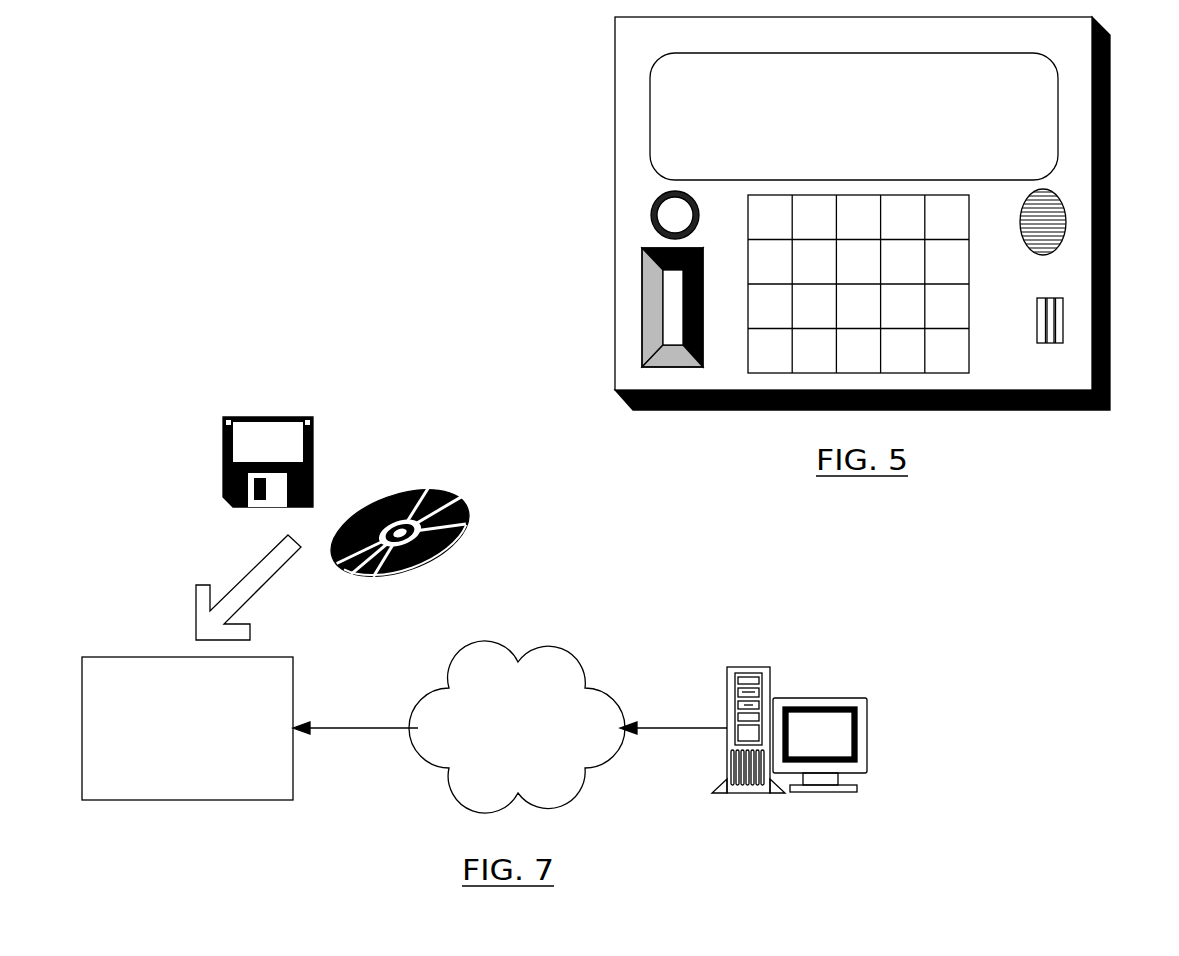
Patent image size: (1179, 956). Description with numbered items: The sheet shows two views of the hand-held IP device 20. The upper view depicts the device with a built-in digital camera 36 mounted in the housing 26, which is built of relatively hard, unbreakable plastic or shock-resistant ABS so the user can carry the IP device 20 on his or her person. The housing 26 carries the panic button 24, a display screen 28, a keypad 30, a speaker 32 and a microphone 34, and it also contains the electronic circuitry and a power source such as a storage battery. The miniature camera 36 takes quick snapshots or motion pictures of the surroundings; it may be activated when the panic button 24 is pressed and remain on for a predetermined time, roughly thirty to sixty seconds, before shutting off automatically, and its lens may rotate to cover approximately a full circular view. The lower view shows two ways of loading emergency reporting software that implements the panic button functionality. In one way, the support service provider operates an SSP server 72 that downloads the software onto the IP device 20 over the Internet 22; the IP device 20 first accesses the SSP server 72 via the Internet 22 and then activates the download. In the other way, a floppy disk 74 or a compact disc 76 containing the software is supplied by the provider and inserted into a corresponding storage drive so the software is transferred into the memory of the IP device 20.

In FIG. 5, the IP device 20 is at (550, 356).
In FIG. 7, the IP device 20 is at (187, 800).
In FIG. 7, the Internet 22 is at (576, 652).
In FIG. 5, the panic button 24 is at (668, 358).
In FIG. 5, the housing 26 is at (615, 80).
In FIG. 5, the display screen 28 is at (657, 134).
In FIG. 5, the keypad 30 is at (934, 355).
In FIG. 5, the speaker 32 is at (1053, 230).
In FIG. 5, the microphone 34 is at (1063, 328).
In FIG. 5, the digital camera 36 is at (674, 214).
In FIG. 7, the SSP server 72 is at (820, 698).
In FIG. 7, the floppy disk 74 is at (223, 462).
In FIG. 7, the compact disc 76 is at (473, 518).